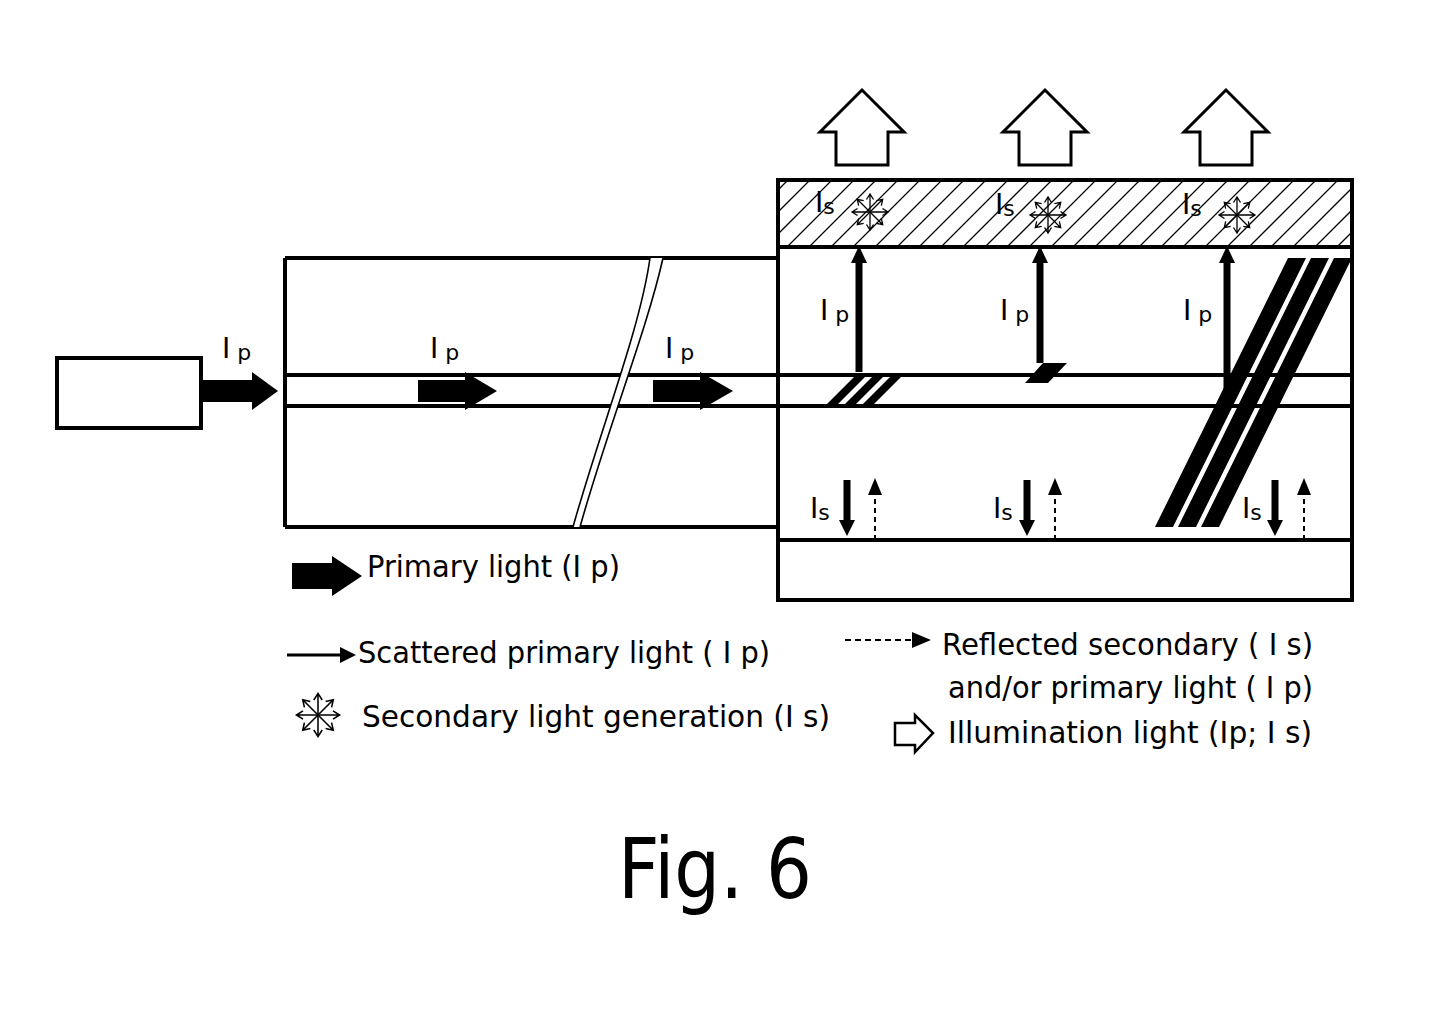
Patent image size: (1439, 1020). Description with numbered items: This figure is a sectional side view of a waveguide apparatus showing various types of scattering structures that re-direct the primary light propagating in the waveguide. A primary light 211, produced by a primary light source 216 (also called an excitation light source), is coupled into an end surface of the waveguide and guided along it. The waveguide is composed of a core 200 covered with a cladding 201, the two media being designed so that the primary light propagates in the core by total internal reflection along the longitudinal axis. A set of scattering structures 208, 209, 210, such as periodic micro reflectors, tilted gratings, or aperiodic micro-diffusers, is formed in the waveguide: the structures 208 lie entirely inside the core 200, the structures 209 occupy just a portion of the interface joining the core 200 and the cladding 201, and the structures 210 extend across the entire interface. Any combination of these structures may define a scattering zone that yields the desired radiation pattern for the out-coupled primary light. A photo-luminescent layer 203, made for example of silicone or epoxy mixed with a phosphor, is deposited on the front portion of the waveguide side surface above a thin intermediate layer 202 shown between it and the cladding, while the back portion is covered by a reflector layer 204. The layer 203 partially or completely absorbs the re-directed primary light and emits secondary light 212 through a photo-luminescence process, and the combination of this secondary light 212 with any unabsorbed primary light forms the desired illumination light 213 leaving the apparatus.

The core 200 is at (1343, 392).
The cladding 201 is at (1343, 352).
The reflective layer 202 is at (1397, 255).
The photo-luminescent layer 203 is at (1397, 220).
The reflector layer 204 is at (1343, 572).
The scattering structures 208 is at (825, 418).
The scattering structures 209 is at (1005, 418).
The scattering structures 210 is at (1240, 468).
The primary light 211 is at (217, 377).
The secondary light 212 is at (797, 183).
The illumination light 213 is at (1248, 110).
The primary light source 216 is at (120, 405).